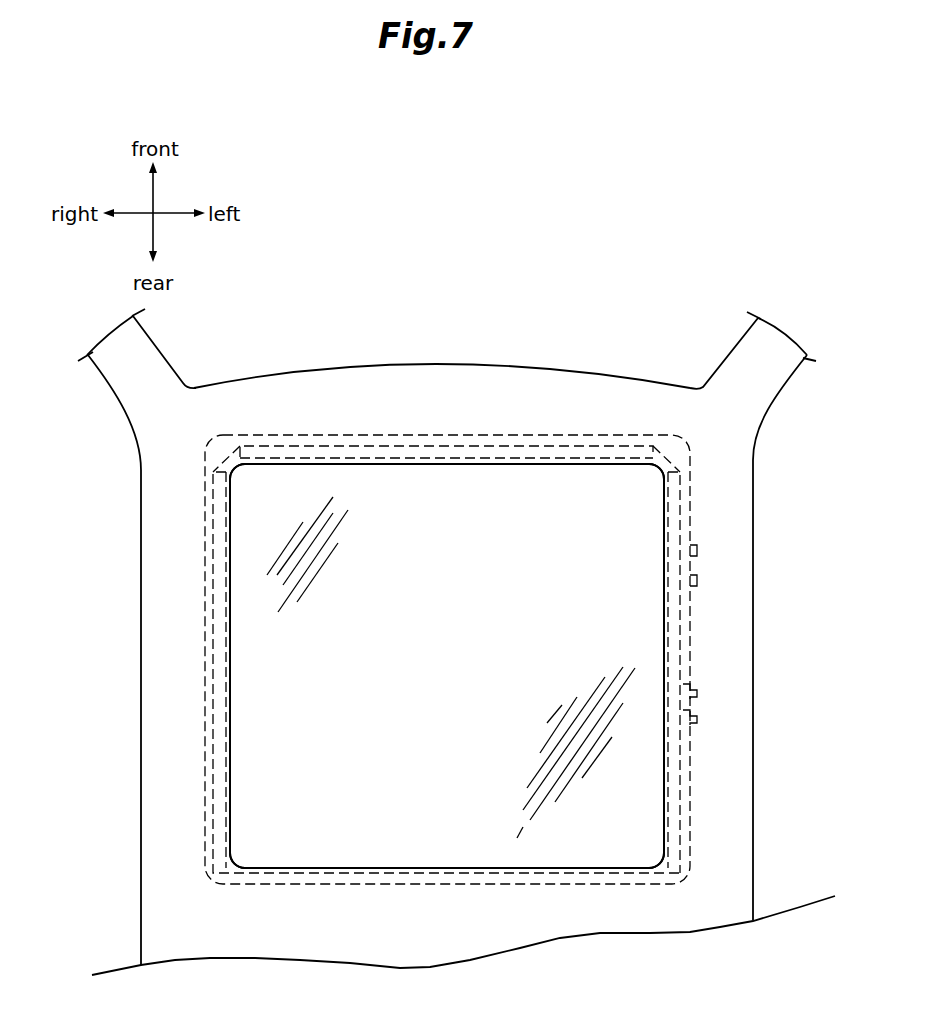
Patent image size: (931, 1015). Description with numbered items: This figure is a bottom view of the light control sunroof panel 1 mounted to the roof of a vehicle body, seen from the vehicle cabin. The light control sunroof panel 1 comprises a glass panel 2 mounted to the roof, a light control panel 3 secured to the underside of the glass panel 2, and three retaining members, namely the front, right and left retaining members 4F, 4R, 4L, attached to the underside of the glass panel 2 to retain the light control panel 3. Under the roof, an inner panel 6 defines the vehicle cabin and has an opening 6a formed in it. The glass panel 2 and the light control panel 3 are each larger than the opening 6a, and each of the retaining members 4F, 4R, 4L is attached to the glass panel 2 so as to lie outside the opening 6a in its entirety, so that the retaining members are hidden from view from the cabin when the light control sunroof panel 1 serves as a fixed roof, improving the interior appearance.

The light control sunroof panel 1 is at (622, 334).
The glass panel 2 is at (507, 433).
The light control panel 3 is at (667, 468).
The front retaining member 4F is at (438, 447).
The right retaining member 4R is at (213, 628).
The left retaining member 4L is at (682, 649).
The inner panel 6 is at (297, 388).
The opening 6a is at (448, 466).